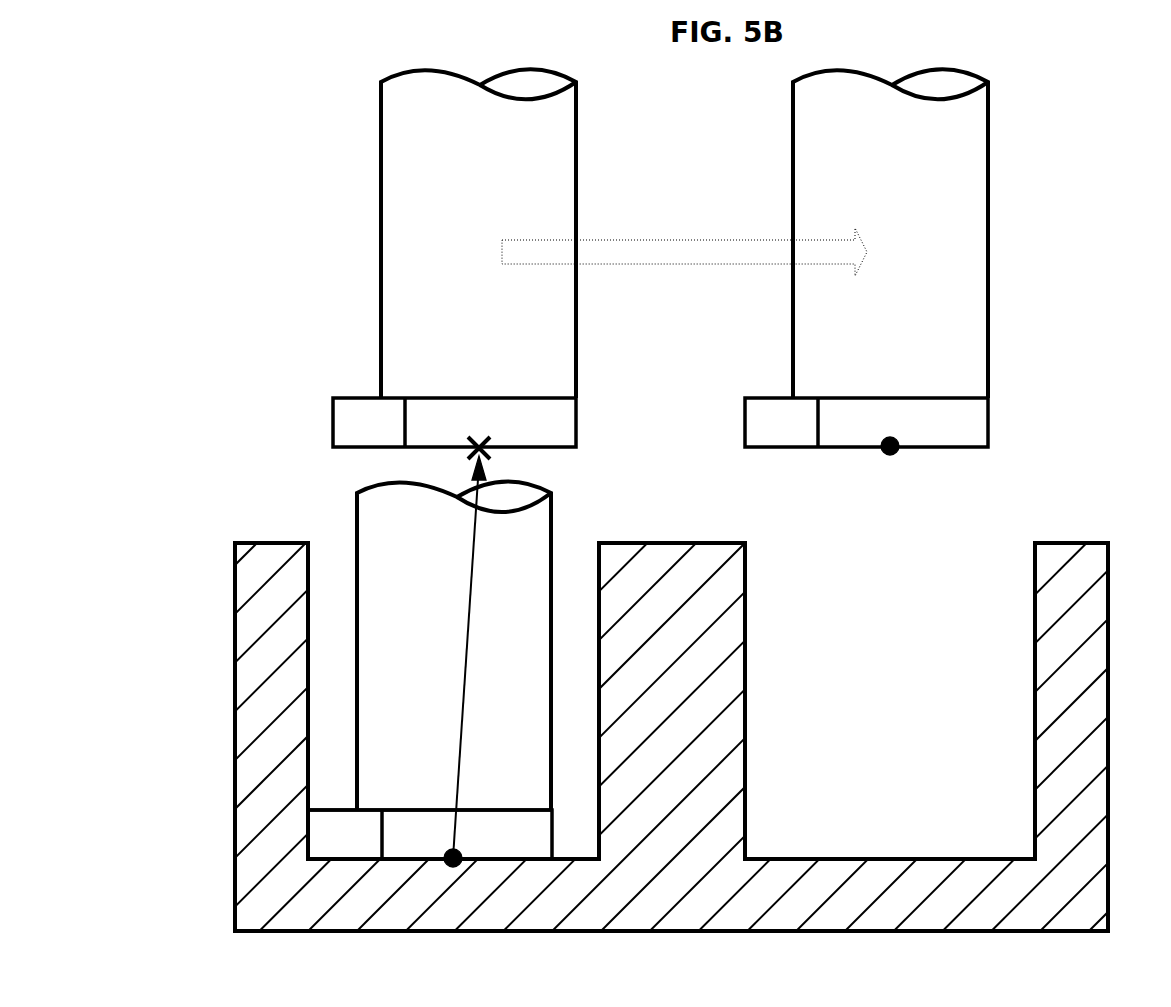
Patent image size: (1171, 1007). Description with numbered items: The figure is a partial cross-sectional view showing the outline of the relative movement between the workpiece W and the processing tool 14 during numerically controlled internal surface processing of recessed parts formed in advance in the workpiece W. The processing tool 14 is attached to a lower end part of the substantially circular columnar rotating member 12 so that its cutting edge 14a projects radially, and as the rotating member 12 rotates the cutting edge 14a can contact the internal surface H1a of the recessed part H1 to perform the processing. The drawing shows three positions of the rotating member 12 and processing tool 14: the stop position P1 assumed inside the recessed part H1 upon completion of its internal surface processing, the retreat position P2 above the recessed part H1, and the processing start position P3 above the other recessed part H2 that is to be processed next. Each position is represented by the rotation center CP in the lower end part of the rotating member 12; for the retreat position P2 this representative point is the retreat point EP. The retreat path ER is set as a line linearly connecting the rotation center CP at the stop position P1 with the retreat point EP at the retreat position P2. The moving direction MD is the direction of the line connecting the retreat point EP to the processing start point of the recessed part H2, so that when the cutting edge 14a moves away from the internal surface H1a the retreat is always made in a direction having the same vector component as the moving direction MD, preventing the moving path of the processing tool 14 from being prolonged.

The rotating member 12 is at (355, 517).
The processing tool 14 is at (553, 836).
The cutting edge 14a is at (330, 812).
The workpiece W is at (1082, 542).
The recessed part H1 is at (575, 547).
The internal surface H1a is at (313, 661).
The recessed part H2 is at (988, 568).
The stop position P1 is at (521, 777).
The retreat position P2 is at (448, 144).
The processing start position P3 is at (957, 191).
The retreat point EP is at (477, 440).
The retreat path ER is at (462, 640).
The rotation center CP is at (452, 856).
The moving direction MD is at (648, 252).